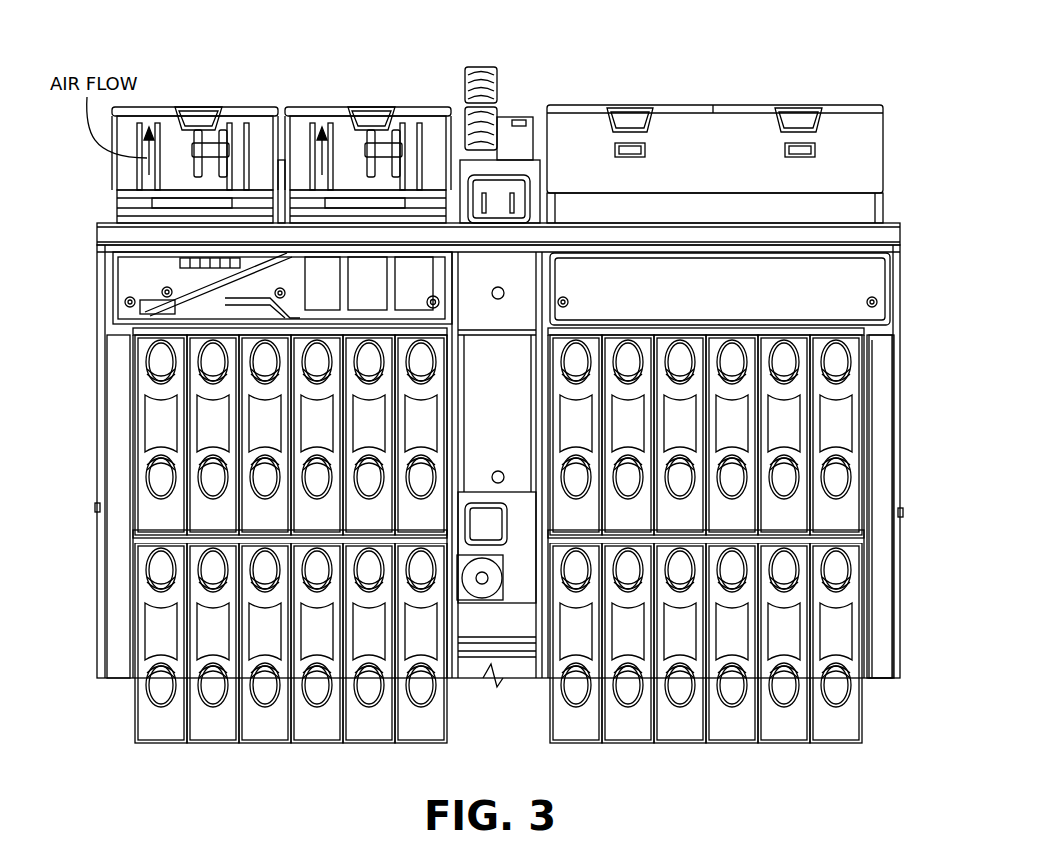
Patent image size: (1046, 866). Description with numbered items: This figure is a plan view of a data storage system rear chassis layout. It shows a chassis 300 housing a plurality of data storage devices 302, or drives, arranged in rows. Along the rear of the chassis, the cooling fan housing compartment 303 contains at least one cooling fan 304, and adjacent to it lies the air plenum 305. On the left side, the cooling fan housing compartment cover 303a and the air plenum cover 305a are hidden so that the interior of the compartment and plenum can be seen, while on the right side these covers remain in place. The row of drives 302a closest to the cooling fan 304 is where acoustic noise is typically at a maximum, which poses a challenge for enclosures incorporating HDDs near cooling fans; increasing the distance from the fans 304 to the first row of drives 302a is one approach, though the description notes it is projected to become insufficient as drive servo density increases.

The chassis 300 is at (97, 405).
The data storage devices 302 is at (864, 690).
The row of drives closest to the cooling fan 302a is at (905, 333).
The cooling fan housing compartment 303 is at (400, 138).
The cooling fan housing compartment cover 303a is at (691, 146).
The cooling fan 304 is at (358, 118).
The air plenum 305 is at (152, 288).
The air plenum cover 305a is at (691, 288).